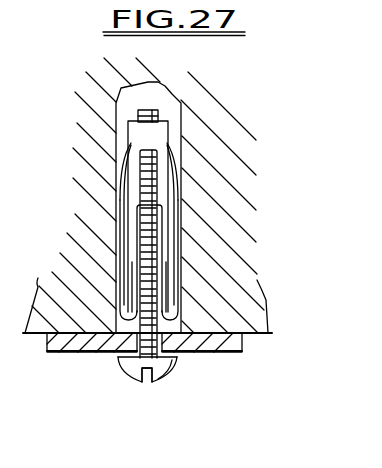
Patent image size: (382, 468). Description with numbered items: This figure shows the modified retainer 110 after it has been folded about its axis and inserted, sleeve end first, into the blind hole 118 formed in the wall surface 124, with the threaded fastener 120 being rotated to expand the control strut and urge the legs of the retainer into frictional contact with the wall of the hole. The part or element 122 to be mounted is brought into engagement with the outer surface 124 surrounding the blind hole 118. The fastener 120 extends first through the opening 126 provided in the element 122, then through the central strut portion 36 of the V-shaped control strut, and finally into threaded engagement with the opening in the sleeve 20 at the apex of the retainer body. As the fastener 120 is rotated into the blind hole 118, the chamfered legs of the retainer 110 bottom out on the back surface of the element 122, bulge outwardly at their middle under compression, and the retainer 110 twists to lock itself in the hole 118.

The sleeve 20 is at (132, 138).
The central strut portion 36 is at (143, 199).
The retainer 110 is at (187, 240).
The blind hole 118 is at (163, 91).
The fastener 120 is at (137, 372).
The part, member or element 122 is at (225, 343).
The wall surface 124 is at (260, 337).
The opening 126 is at (155, 374).